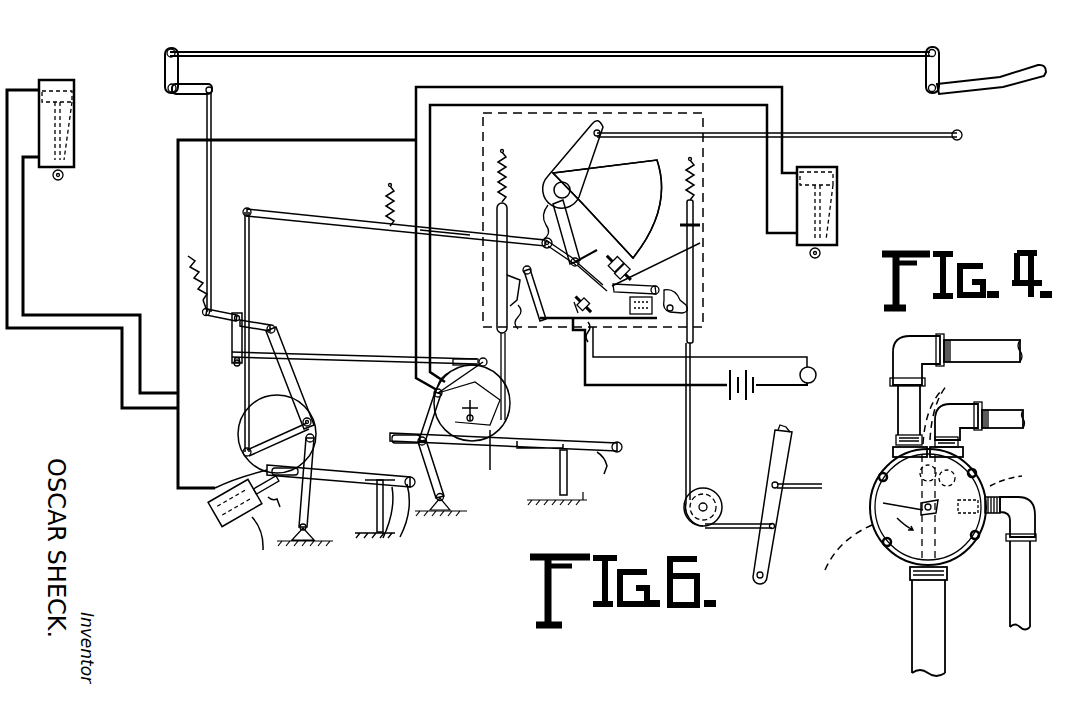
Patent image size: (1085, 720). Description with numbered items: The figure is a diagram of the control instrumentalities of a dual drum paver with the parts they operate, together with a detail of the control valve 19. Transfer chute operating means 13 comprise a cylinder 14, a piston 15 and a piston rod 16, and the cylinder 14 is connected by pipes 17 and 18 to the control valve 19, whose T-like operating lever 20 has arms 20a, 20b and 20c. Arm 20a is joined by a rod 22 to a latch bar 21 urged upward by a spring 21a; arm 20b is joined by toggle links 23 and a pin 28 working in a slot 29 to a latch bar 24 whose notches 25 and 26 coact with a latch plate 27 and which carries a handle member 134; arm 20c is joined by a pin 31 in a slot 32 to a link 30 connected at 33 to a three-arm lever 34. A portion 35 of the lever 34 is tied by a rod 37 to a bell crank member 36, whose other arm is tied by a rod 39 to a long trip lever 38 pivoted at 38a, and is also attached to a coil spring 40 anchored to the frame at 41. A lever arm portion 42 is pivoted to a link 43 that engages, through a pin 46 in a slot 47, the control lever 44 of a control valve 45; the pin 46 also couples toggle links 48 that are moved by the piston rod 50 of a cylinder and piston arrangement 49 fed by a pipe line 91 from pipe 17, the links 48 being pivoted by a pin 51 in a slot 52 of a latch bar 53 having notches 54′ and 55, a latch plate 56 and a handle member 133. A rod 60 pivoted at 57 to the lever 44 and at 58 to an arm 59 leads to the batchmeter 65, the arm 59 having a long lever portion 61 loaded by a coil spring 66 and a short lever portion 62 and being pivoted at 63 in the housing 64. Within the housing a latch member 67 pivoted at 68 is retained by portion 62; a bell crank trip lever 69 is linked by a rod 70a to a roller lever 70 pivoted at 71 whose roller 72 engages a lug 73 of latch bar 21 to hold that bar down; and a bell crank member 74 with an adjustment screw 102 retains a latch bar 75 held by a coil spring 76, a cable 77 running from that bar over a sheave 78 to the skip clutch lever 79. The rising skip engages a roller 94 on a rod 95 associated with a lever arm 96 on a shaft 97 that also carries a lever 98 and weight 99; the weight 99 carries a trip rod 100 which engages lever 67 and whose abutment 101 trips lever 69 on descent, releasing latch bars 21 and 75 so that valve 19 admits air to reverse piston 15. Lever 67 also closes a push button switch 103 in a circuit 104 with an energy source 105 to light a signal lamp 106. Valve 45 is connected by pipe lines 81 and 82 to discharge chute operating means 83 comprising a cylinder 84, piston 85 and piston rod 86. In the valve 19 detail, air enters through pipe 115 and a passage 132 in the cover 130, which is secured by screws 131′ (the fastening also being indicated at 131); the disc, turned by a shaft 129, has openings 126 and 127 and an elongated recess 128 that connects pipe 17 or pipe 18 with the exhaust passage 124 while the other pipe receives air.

In FIG. 6, the transfer chute operating means 13 is at (840, 186).
In FIG. 6, the cylinder 14 is at (826, 171).
In FIG. 6, the piston 15 is at (840, 204).
In FIG. 6, the piston rod 16 is at (822, 256).
In FIG. 6, the pipe 17 is at (415, 266).
In FIG. 4, the pipe 17 is at (1024, 410).
In FIG. 6, the pipe 18 is at (432, 197).
In FIG. 4, the pipe 18 is at (1006, 339).
In FIG. 6, the control valve 19 is at (511, 403).
In FIG. 4, the control valve 19 is at (878, 536).
In FIG. 6, the operating lever structure 20 is at (490, 470).
In FIG. 6, the arm 20a is at (509, 398).
In FIG. 6, the arm 20b is at (431, 413).
In FIG. 6, the arm 20c is at (434, 392).
In FIG. 6, the latch bar 21 is at (496, 299).
In FIG. 6, the spring 21a is at (497, 166).
In FIG. 6, the rod 22 is at (507, 367).
In FIG. 6, the toggle links 23 is at (438, 481).
In FIG. 6, the latch bar 24 is at (606, 466).
In FIG. 6, the notch 25 is at (569, 450).
In FIG. 6, the notch 26 is at (537, 442).
In FIG. 6, the latch plate 27 is at (583, 503).
In FIG. 6, the pin 28 is at (420, 446).
In FIG. 6, the slot 29 is at (390, 440).
In FIG. 6, the link 30 is at (338, 354).
In FIG. 6, the pin 31 is at (483, 358).
In FIG. 6, the slot 32 is at (462, 358).
In FIG. 6, the connection 33 is at (234, 367).
In FIG. 6, the three-arm lever 34 is at (246, 318).
In FIG. 6, the portion 35 is at (214, 323).
In FIG. 6, the bell crank member 36 is at (196, 82).
In FIG. 6, the rod 37 is at (213, 180).
In FIG. 6, the long trip lever 38 is at (1044, 62).
In FIG. 6, the pivot 38a is at (924, 90).
In FIG. 6, the rod 39 is at (750, 50).
In FIG. 6, the coil spring 40 is at (199, 301).
In FIG. 6, the frame attachment point 41 is at (186, 259).
In FIG. 6, the lever arm portion 42 is at (275, 324).
In FIG. 6, the link 43 is at (293, 391).
In FIG. 6, the control lever 44 is at (244, 449).
In FIG. 6, the control valve 45 is at (268, 397).
In FIG. 6, the pin 46 is at (311, 423).
In FIG. 6, the slot 47 is at (314, 438).
In FIG. 6, the toggle links 48 is at (311, 497).
In FIG. 6, the control cylinder and piston arrangement 49 is at (238, 522).
In FIG. 6, the piston rod 50 is at (273, 508).
In FIG. 6, the pin 51 is at (264, 545).
In FIG. 6, the slot 52 is at (222, 490).
In FIG. 6, the latch bar 53 is at (406, 520).
In FIG. 6, the notch 54′ is at (330, 483).
In FIG. 6, the notch 55 is at (373, 509).
In FIG. 6, the latch plate 56 is at (385, 543).
In FIG. 6, the pivot connection 57 is at (244, 455).
In FIG. 6, the pivot connection 58 is at (250, 209).
In FIG. 6, the arm 59 is at (328, 223).
In FIG. 6, the rod 60 is at (250, 262).
In FIG. 6, the long lever portion 61 is at (447, 236).
In FIG. 6, the short lever portion 62 is at (574, 232).
In FIG. 6, the pivot 63 is at (547, 238).
In FIG. 6, the housing 64 is at (533, 112).
In FIG. 6, the batchmeter 65 is at (620, 113).
In FIG. 6, the coil spring 66 is at (388, 195).
In FIG. 6, the latch member 67 is at (589, 246).
In FIG. 6, the pivot 68 is at (572, 266).
In FIG. 6, the bell crank trip lever 69 is at (662, 318).
In FIG. 6, the roller lever 70 is at (538, 303).
In FIG. 6, the rod 70a is at (592, 336).
In FIG. 6, the pivot 71 is at (530, 268).
In FIG. 6, the roller member 72 is at (521, 332).
In FIG. 6, the lug 73 is at (505, 279).
In FIG. 6, the bell crank member 74 is at (660, 300).
In FIG. 6, the latch bar 75 is at (695, 287).
In FIG. 6, the coil spring 76 is at (697, 181).
In FIG. 6, the cable 77 is at (693, 441).
In FIG. 6, the sheave 78 is at (705, 527).
In FIG. 6, the skip clutch lever 79 is at (770, 544).
In FIG. 6, the pipe line 81 is at (141, 356).
In FIG. 6, the pipe line 82 is at (122, 369).
In FIG. 6, the discharge chute operating means 83 is at (74, 95).
In FIG. 6, the cylinder 84 is at (73, 110).
In FIG. 6, the piston 85 is at (75, 145).
In FIG. 6, the piston rod 86 is at (64, 170).
In FIG. 6, the pipe line 91 is at (316, 138).
In FIG. 6, the roller 94 is at (963, 132).
In FIG. 6, the rod 95 is at (906, 133).
In FIG. 6, the lever arm 96 is at (600, 152).
In FIG. 6, the shaft 97 is at (571, 190).
In FIG. 6, the lever 98 is at (558, 222).
In FIG. 6, the weight 99 is at (641, 241).
In FIG. 6, the trip rod 100 is at (604, 265).
In FIG. 6, the abutment 101 is at (702, 243).
In FIG. 6, the adjustment screw 102 is at (633, 351).
In FIG. 6, the electric push button switch 103 is at (579, 298).
In FIG. 6, the electric circuit 104 is at (801, 357).
In FIG. 6, the source of electric energy 105 is at (748, 396).
In FIG. 6, the signal lamp 106 is at (817, 377).
In FIG. 4, the pipe line 115 is at (1020, 583).
In FIG. 4, the exhaust passage 124 is at (950, 570).
In FIG. 4, the opening 126 is at (1003, 500).
In FIG. 4, the opening 127 is at (888, 449).
In FIG. 4, the elongated recess 128 is at (950, 402).
In FIG. 4, the shaft 129 is at (883, 503).
In FIG. 4, the covering 130 is at (1024, 473).
In FIG. 4, the pipe 131 is at (912, 604).
In FIG. 4, the screws 131′ is at (881, 473).
In FIG. 4, the passage 132 is at (846, 559).
In FIG. 6, the handle member 133 is at (436, 514).
In FIG. 6, the handle member 134 is at (624, 445).